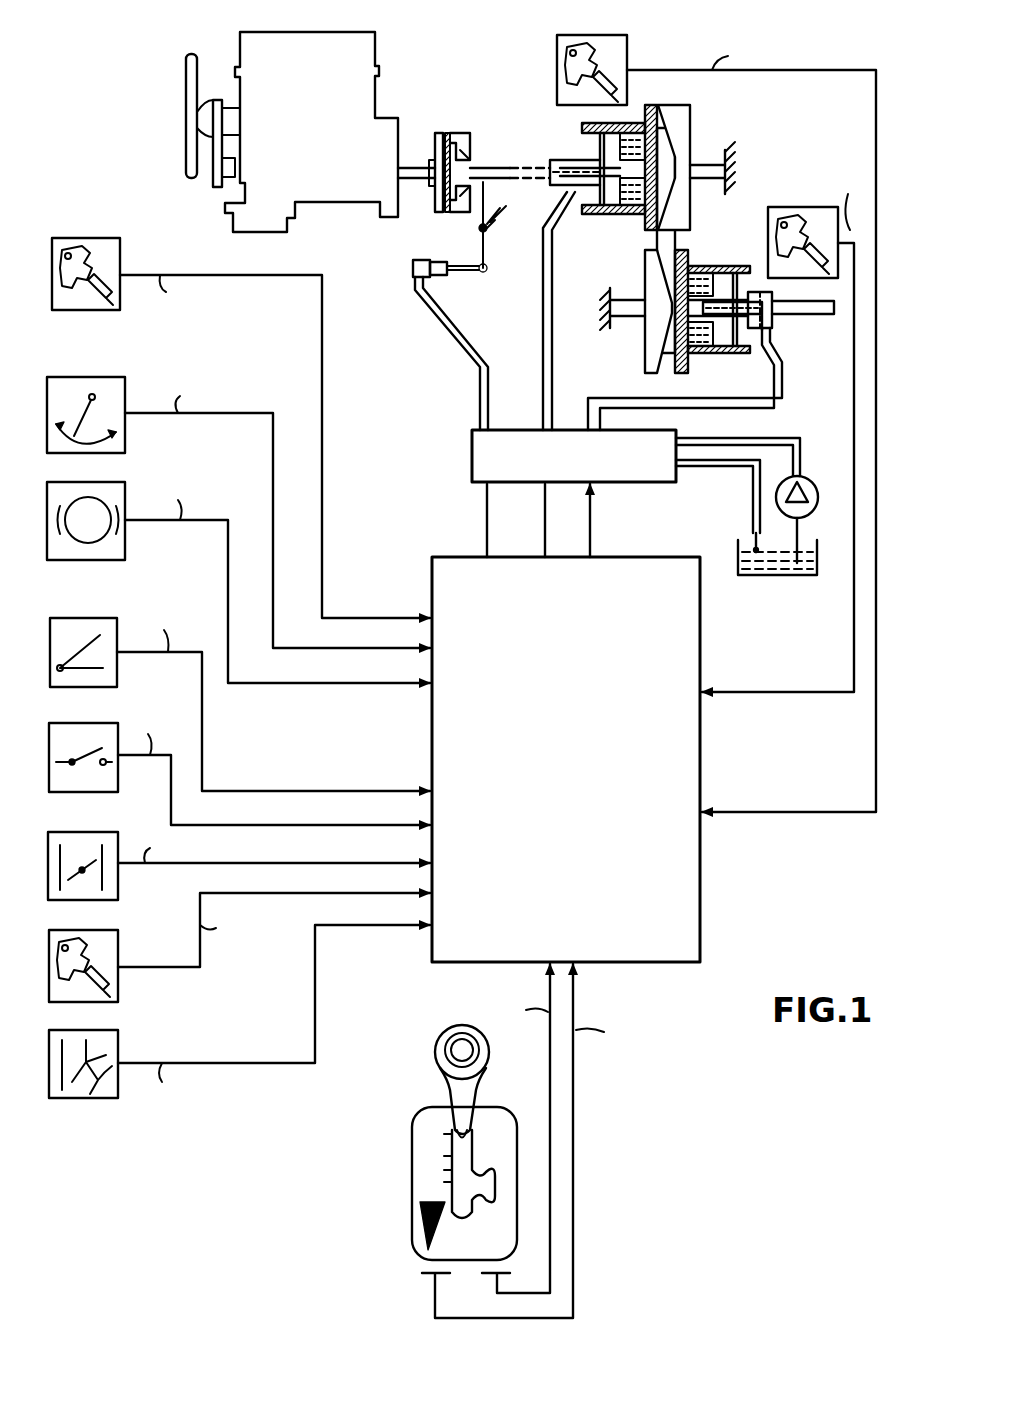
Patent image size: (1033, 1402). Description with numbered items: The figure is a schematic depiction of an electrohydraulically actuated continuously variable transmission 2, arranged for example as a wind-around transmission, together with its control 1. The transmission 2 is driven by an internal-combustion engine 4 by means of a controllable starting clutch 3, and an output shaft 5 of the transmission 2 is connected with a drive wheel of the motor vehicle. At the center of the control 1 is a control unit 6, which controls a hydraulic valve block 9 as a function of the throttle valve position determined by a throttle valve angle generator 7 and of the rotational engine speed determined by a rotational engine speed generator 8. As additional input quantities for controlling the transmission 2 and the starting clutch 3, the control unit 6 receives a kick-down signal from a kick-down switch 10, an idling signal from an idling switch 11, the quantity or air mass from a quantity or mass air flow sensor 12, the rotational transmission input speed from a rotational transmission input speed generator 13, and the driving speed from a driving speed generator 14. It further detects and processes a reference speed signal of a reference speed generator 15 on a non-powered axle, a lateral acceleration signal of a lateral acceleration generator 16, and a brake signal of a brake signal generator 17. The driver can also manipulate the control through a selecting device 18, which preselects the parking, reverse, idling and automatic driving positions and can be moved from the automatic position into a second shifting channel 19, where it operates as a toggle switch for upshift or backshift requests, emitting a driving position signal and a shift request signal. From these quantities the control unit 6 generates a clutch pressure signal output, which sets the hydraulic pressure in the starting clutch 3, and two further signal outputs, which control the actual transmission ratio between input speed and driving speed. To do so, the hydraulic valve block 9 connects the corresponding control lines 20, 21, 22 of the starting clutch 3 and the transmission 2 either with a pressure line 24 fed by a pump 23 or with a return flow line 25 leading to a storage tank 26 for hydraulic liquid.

The control 1 is at (732, 872).
The continuously variable transmission 2 is at (770, 150).
The starting clutch 3 is at (470, 116).
The internal-combustion engine 4 is at (375, 72).
The output shaft 5 is at (815, 316).
The control unit 6 is at (700, 622).
The throttle valve angle generator 7 is at (48, 872).
The rotational engine speed generator 8 is at (49, 972).
The hydraulic valve block 9 is at (472, 455).
The kick-down switch 10 is at (50, 660).
The idling switch 11 is at (49, 766).
The quantity or mass air flow sensor 12 is at (49, 1070).
The rotational transmission input speed generator 13 is at (627, 46).
The driving speed generator 14 is at (800, 207).
The reference speed generator 15 is at (52, 300).
The lateral acceleration generator 16 is at (47, 430).
The brake signal generator 17 is at (47, 530).
The selecting device 18 is at (412, 1160).
The second shifting channel 19 is at (490, 1205).
The control line 20 is at (470, 340).
The control line 21 is at (552, 285).
The control line 22 is at (600, 400).
The pump 23 is at (816, 488).
The pressure line 24 is at (798, 430).
The return flow line 25 is at (750, 495).
The storage tank 26 is at (785, 575).